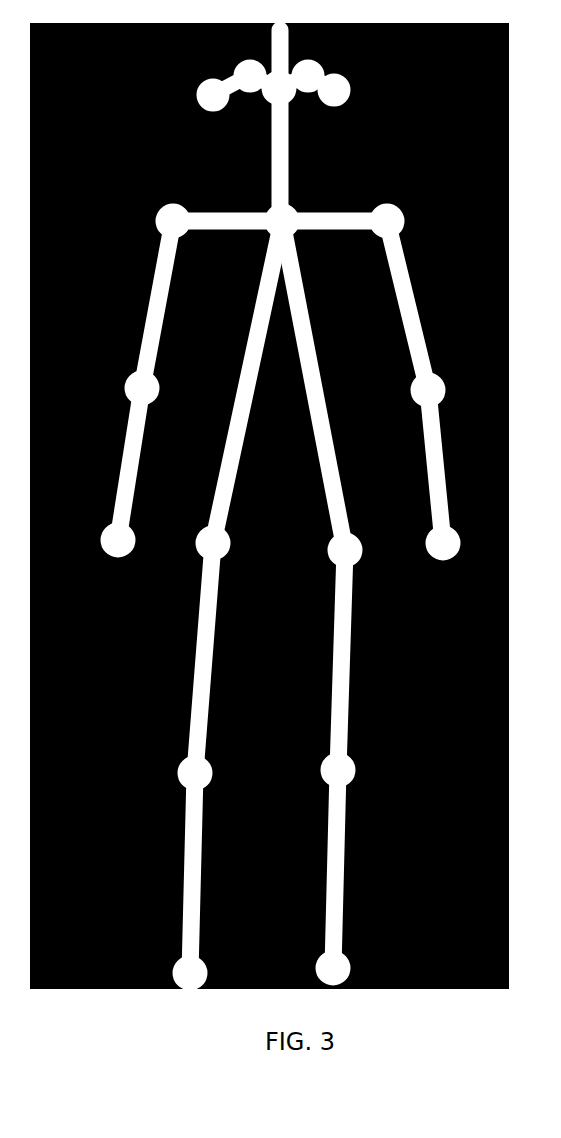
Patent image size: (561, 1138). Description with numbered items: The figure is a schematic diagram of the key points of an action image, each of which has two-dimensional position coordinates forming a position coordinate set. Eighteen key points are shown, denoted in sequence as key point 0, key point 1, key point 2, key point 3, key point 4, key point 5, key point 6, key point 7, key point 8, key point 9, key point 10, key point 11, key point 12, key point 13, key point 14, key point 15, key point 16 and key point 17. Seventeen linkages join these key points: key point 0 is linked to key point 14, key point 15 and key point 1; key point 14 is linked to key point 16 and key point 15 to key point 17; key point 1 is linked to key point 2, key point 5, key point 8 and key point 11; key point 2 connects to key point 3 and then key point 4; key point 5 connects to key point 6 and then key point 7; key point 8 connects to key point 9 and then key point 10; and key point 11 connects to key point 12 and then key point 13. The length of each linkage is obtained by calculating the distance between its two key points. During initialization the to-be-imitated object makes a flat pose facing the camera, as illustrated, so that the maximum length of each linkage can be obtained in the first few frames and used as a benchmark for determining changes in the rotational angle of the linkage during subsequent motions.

The key point 0 is at (274, 121).
The key point 1 is at (280, 158).
The key point 2 is at (156, 214).
The key point 3 is at (130, 315).
The key point 4 is at (105, 479).
The key point 5 is at (402, 199).
The key point 6 is at (438, 313).
The key point 7 is at (461, 481).
The key point 8 is at (224, 396).
The key point 9 is at (180, 675).
The key point 10 is at (156, 883).
The key point 11 is at (346, 405).
The key point 12 is at (368, 674).
The key point 13 is at (365, 881).
The key point 14 is at (238, 48).
The key point 15 is at (301, 48).
The key point 16 is at (186, 97).
The key point 17 is at (356, 87).